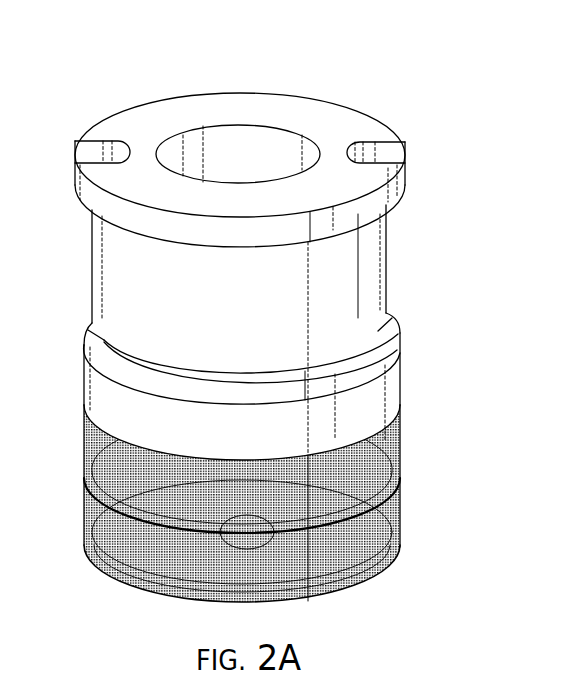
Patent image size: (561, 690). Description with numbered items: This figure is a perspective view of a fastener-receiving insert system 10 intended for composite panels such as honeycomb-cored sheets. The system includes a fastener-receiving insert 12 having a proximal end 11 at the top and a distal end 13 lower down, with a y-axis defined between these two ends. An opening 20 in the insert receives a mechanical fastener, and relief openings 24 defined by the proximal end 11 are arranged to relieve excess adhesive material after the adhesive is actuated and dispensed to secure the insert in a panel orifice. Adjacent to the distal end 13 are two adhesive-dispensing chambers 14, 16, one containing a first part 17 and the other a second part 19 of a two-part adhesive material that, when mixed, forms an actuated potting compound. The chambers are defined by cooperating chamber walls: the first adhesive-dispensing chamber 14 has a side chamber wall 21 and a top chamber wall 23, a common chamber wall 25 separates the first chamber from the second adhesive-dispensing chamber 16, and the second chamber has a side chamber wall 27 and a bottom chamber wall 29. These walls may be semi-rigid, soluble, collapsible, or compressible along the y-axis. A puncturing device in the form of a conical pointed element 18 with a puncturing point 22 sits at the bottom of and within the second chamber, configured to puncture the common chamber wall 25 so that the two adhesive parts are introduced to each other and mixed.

The fastener-receiving insert system 10 is at (466, 46).
The proximal end 11 is at (363, 108).
The fastener-receiving insert 12 is at (400, 265).
The distal end 13 is at (400, 383).
The adhesive-dispensing chamber 14 is at (400, 443).
The adhesive-dispensing chamber 16 is at (400, 522).
The first part 17 is at (117, 447).
The pointed element 18 is at (252, 540).
The second part 19 is at (120, 521).
The opening 20 is at (242, 146).
The side chamber wall 21 is at (84, 435).
The puncturing point 22 is at (247, 516).
The top chamber wall 23 is at (84, 407).
The relief openings 24 is at (386, 153).
The common chamber wall 25 is at (84, 493).
The side chamber wall 27 is at (117, 553).
The bottom chamber wall 29 is at (117, 577).